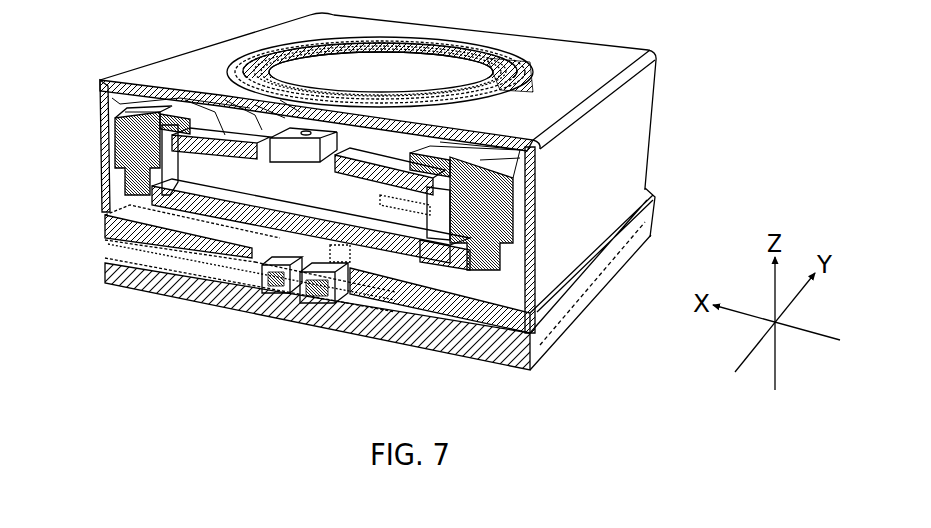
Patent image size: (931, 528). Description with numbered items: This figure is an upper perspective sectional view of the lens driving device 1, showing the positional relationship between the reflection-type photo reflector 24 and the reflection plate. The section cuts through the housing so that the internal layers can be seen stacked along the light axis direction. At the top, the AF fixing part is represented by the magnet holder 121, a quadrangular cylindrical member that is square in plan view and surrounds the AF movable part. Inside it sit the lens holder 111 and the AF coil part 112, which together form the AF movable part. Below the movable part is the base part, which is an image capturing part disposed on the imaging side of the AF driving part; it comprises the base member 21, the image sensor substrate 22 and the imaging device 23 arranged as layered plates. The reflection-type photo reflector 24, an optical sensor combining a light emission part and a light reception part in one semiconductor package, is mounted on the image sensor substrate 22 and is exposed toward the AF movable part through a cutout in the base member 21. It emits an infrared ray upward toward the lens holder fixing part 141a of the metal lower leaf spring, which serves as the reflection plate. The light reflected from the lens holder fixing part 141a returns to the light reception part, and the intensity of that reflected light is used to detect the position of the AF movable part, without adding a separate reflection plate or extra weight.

The lens driving device 1 is at (688, 101).
The magnet holder 121 is at (118, 149).
The base member 21 is at (127, 234).
The image sensor substrate 22 is at (127, 267).
The imaging device 23 is at (223, 268).
The reflection-type photo reflector 24 is at (300, 235).
The lens holder fixing part 141a is at (265, 224).
The lens holder 111 is at (350, 238).
The AF coil part 112 is at (398, 213).